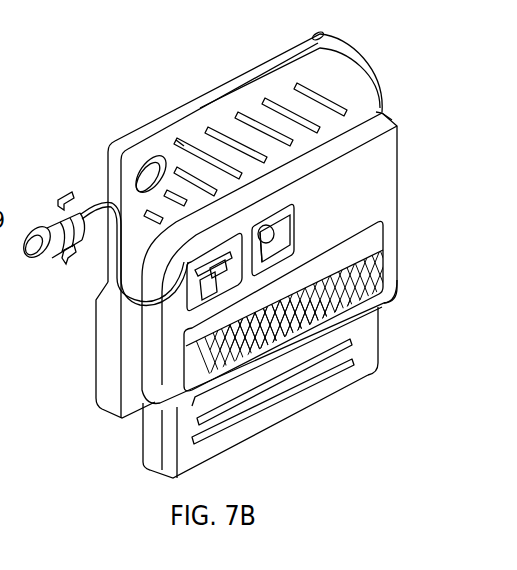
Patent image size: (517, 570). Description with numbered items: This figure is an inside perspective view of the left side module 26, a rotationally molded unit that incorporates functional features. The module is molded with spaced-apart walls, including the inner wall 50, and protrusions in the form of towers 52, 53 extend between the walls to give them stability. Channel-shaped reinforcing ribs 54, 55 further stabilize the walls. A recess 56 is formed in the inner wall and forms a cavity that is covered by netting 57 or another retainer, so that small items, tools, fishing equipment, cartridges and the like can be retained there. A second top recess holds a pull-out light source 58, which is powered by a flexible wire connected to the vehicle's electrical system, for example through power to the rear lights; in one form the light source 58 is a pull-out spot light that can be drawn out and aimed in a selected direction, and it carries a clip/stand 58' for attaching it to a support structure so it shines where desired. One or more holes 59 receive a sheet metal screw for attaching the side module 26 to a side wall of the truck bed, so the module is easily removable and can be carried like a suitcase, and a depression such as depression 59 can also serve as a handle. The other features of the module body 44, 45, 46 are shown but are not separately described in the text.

The side module 26 is at (100, 122).
The housing 44 is at (380, 168).
The housing corner 45 is at (385, 118).
The housing lower corner 46 is at (386, 308).
The inner wall 50 is at (366, 88).
The tower 52 is at (172, 145).
The tower 53 is at (283, 240).
The channel-shaped reinforcing rib 54 is at (232, 135).
The channel-shaped reinforcing rib 55 is at (232, 387).
The recess 56 is at (347, 247).
The netting 57 is at (371, 375).
The pull-out light source 58 is at (125, 287).
The clip/stand 58' is at (57, 202).
The hole 59 is at (160, 163).